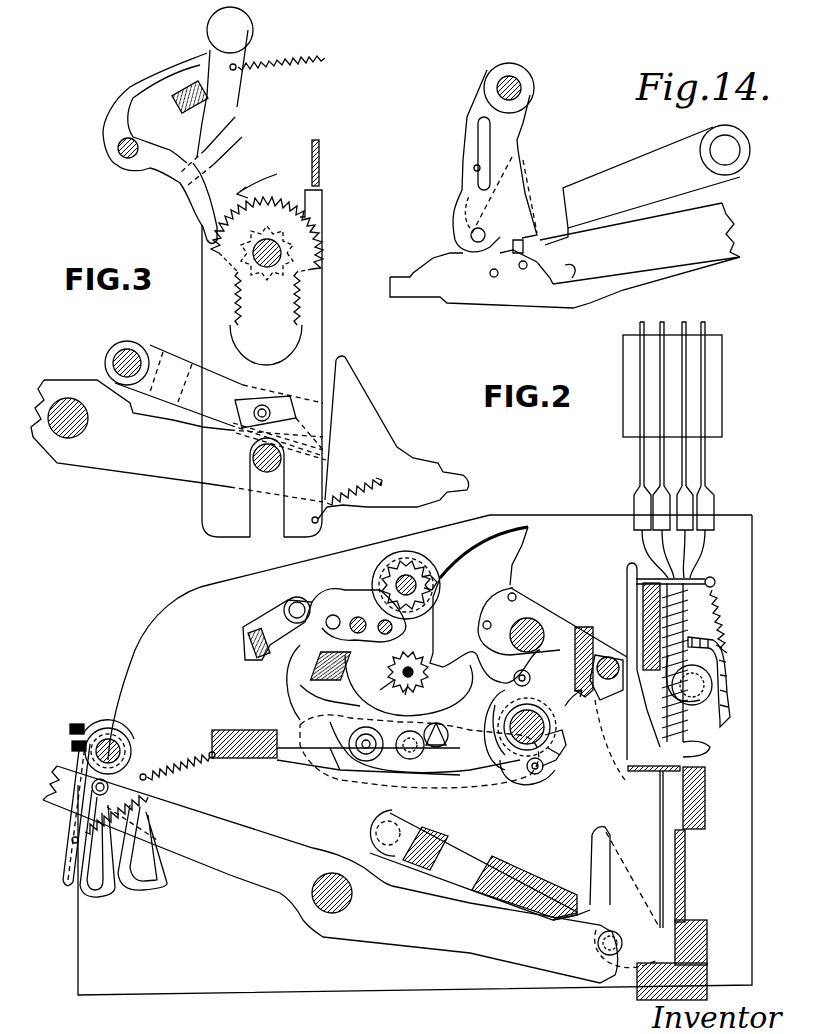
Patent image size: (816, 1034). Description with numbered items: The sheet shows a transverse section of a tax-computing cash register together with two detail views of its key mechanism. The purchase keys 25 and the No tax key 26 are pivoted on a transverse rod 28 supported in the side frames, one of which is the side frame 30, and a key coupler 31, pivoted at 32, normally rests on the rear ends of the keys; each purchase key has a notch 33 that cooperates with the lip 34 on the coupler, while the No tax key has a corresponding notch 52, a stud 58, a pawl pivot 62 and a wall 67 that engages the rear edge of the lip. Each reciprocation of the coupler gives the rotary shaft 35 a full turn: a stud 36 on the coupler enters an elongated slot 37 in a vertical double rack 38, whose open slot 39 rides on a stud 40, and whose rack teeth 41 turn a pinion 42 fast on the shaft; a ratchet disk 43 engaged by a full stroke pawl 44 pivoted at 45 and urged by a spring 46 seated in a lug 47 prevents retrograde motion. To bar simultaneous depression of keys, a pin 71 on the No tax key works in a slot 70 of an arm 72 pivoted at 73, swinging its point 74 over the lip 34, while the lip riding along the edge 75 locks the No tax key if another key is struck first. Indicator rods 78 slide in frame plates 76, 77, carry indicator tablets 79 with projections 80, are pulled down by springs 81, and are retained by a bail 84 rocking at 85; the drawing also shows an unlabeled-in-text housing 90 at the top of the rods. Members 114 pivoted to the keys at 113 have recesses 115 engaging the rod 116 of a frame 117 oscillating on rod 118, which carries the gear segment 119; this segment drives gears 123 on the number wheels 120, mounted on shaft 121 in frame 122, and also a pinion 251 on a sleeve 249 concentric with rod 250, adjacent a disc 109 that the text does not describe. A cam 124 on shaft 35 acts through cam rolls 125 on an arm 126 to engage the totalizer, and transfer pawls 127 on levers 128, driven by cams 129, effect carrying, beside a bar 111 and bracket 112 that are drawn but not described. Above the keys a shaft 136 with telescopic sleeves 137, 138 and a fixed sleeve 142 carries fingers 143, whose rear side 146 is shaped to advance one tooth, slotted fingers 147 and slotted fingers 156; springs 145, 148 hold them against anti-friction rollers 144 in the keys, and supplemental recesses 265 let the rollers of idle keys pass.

In FIG. 3, the amount or purchase keys 25 is at (83, 467).
In FIG. 2, the amount or purchase keys 25 is at (356, 935).
In FIG. 14, the No tax key 26 is at (628, 266).
In FIG. 3, the transverse rod 28 is at (82, 432).
In FIG. 2, the transverse rod 28 is at (315, 905).
In FIG. 2, the side frame 30 is at (160, 992).
In FIG. 3, the key coupler 31 is at (153, 348).
In FIG. 14, the key coupler 31 is at (603, 180).
In FIG. 2, the key coupler 31 is at (515, 862).
In FIG. 3, the key coupler pivot 32 is at (112, 362).
In FIG. 2, the key coupler pivot 32 is at (378, 830).
In FIG. 2, the notch 33 is at (576, 905).
In FIG. 14, the lip 34 is at (552, 234).
In FIG. 2, the lip 34 is at (563, 905).
In FIG. 3, the rotary shaft 35 is at (262, 300).
In FIG. 2, the rotary shaft 35 is at (556, 729).
In FIG. 3, the stud 36 is at (268, 406).
In FIG. 3, the elongated slot 37 is at (286, 422).
In FIG. 3, the double rack 38 is at (313, 318).
In FIG. 3, the open slot 39 is at (262, 545).
In FIG. 3, the stud 40 is at (282, 465).
In FIG. 3, the rack teeth 41 is at (290, 337).
In FIG. 3, the pinion 42 is at (276, 233).
In FIG. 3, the ratchet or full stroke disk 43 is at (257, 176).
In FIG. 3, the full stroke pawl or lever 44 is at (190, 205).
In FIG. 3, the pawl pivot 45 is at (118, 151).
In FIG. 3, the spring 46 is at (210, 76).
In FIG. 3, the lug 47 is at (183, 106).
In FIG. 14, the notch 52 is at (513, 242).
In FIG. 14, the stud 58 is at (491, 276).
In FIG. 14, the pawl pivot 62 is at (523, 269).
In FIG. 14, the wall 67 is at (574, 272).
In FIG. 14, the slot 70 is at (475, 170).
In FIG. 14, the pin 71 is at (470, 237).
In FIG. 14, the arm 72 is at (466, 122).
In FIG. 14, the pivot 73 is at (522, 87).
In FIG. 14, the point 74 is at (528, 218).
In FIG. 14, the edge 75 is at (522, 147).
In FIG. 2, the frame plate 76 is at (712, 576).
In FIG. 2, the frame plate 77 is at (692, 769).
In FIG. 2, the indicator rod 78 is at (686, 612).
In FIG. 2, the indicator tablet 79 is at (702, 320).
In FIG. 2, the projections 80 is at (710, 748).
In FIG. 2, the springs 81 is at (690, 637).
In FIG. 2, the bail 84 is at (726, 660).
In FIG. 2, the bail pivot 85 is at (712, 685).
In FIG. 2, the terminal block 90 is at (724, 378).
In FIG. 2, the disc 109 is at (412, 557).
In FIG. 2, the bar 111 is at (300, 773).
In FIG. 2, the bracket 112 is at (230, 754).
In FIG. 2, the pivot point 113 is at (600, 955).
In FIG. 2, the members 114 is at (640, 970).
In FIG. 2, the recesses 115 is at (556, 750).
In FIG. 2, the rod 116 is at (606, 655).
In FIG. 2, the frame 117 is at (580, 625).
In FIG. 2, the rod 118 is at (540, 625).
In FIG. 2, the gear segment 119 is at (515, 548).
In FIG. 2, the number wheels 120 is at (392, 566).
In FIG. 2, the shaft 121 is at (401, 560).
In FIG. 2, the frame 122 is at (290, 678).
In FIG. 2, the gears 123 is at (436, 586).
In FIG. 2, the cam 124 is at (510, 682).
In FIG. 2, the cam rolls 125 is at (514, 674).
In FIG. 2, the arm 126 is at (508, 778).
In FIG. 2, the transfer pawls 127 is at (310, 598).
In FIG. 2, the levers 128 is at (300, 695).
In FIG. 2, the cams 129 is at (630, 784).
In FIG. 2, the shaft 136 is at (118, 745).
In FIG. 2, the sleeve 137 is at (125, 733).
In FIG. 2, the sleeve 138 is at (112, 728).
In FIG. 2, the sleeve 142 is at (120, 762).
In FIG. 2, the fingers 143 is at (66, 866).
In FIG. 2, the anti-friction rollers 144 is at (146, 774).
In FIG. 2, the spring 145 is at (168, 778).
In FIG. 2, the rear side 146 is at (98, 896).
In FIG. 2, the slotted fingers 147 is at (82, 895).
In FIG. 2, the spring 148 is at (210, 753).
In FIG. 2, the slotted fingers 156 is at (158, 893).
In FIG. 2, the sleeve 249 is at (414, 702).
In FIG. 2, the rod 250 is at (420, 678).
In FIG. 2, the pinion 251 is at (381, 694).
In FIG. 2, the supplemental slots or recesses 265 is at (148, 818).